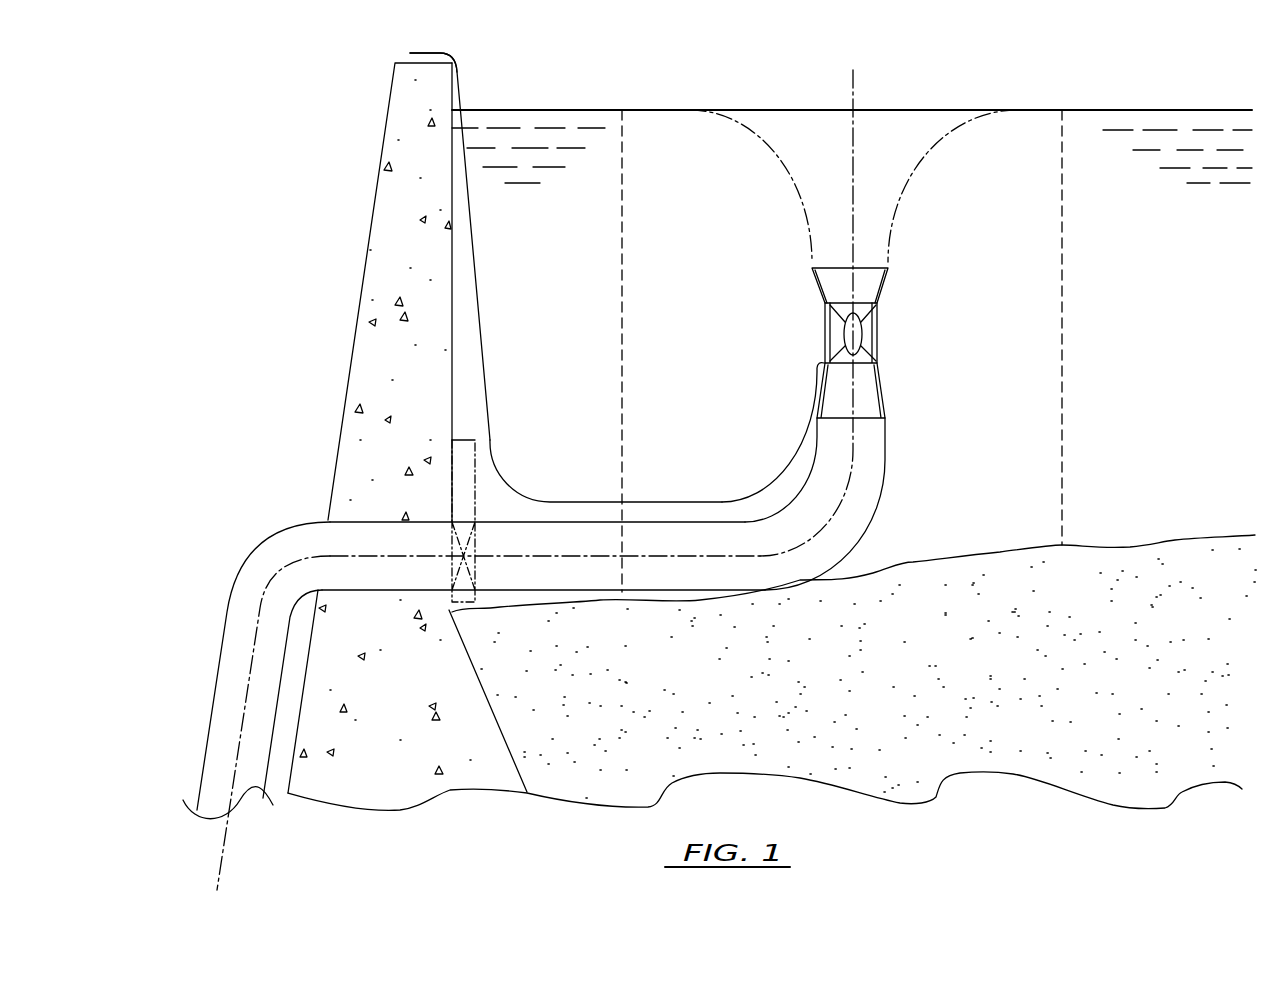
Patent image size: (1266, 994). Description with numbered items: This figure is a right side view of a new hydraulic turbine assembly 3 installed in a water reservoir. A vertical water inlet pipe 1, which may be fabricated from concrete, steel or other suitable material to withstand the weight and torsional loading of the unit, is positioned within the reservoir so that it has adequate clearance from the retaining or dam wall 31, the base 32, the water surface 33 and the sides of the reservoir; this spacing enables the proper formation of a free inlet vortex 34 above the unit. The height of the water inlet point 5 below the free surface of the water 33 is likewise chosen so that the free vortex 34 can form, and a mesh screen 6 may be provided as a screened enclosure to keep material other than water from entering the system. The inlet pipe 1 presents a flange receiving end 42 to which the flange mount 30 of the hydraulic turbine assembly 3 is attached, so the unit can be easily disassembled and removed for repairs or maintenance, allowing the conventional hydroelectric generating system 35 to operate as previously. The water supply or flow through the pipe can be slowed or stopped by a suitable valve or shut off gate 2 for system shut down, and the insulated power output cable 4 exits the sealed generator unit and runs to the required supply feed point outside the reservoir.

The vertical water inlet pipe 1 is at (706, 523).
The shut off gate 2 is at (463, 440).
The hydraulic turbine assembly 3 is at (815, 333).
The power output cable 4 is at (462, 98).
The water inlet point 5 is at (858, 262).
The mesh screen 6 is at (624, 133).
The flange mount 30 is at (886, 418).
The dam wall 31 is at (357, 297).
The base 32 is at (1125, 548).
The water surface 33 is at (1142, 110).
The free inlet vortex 34 is at (776, 163).
The conventional hydroelectric generating system 35 is at (213, 864).
The flange receiving end 42 is at (862, 403).